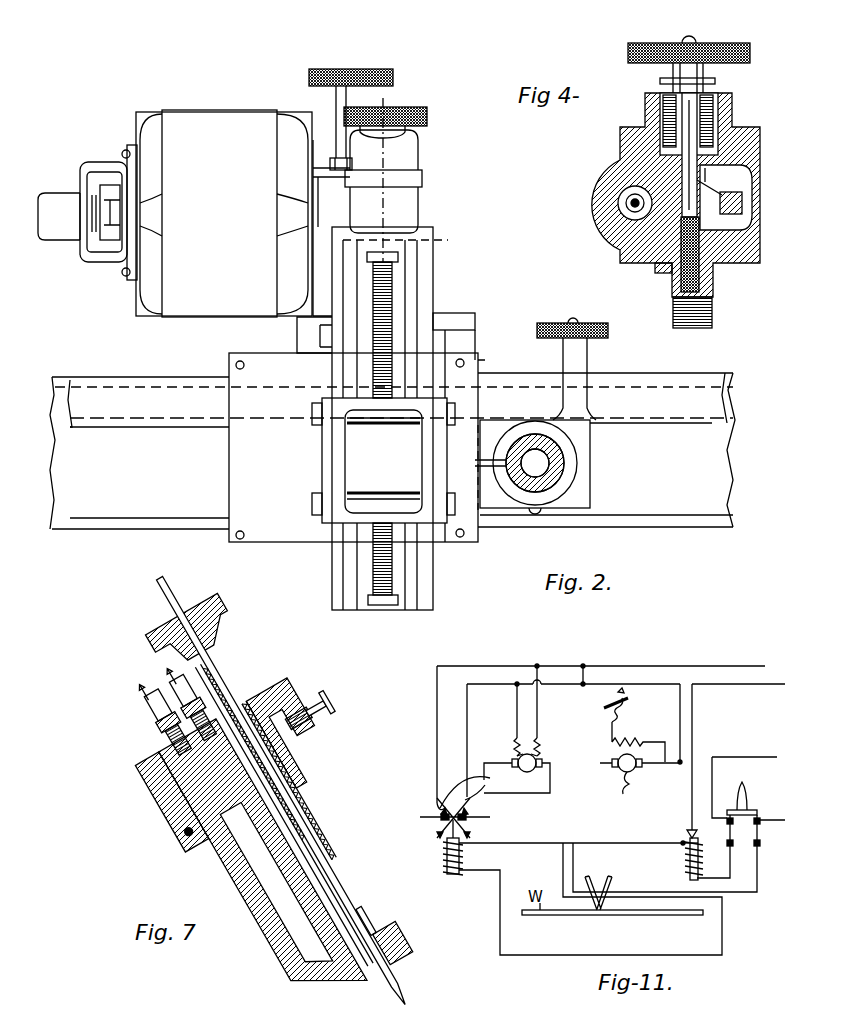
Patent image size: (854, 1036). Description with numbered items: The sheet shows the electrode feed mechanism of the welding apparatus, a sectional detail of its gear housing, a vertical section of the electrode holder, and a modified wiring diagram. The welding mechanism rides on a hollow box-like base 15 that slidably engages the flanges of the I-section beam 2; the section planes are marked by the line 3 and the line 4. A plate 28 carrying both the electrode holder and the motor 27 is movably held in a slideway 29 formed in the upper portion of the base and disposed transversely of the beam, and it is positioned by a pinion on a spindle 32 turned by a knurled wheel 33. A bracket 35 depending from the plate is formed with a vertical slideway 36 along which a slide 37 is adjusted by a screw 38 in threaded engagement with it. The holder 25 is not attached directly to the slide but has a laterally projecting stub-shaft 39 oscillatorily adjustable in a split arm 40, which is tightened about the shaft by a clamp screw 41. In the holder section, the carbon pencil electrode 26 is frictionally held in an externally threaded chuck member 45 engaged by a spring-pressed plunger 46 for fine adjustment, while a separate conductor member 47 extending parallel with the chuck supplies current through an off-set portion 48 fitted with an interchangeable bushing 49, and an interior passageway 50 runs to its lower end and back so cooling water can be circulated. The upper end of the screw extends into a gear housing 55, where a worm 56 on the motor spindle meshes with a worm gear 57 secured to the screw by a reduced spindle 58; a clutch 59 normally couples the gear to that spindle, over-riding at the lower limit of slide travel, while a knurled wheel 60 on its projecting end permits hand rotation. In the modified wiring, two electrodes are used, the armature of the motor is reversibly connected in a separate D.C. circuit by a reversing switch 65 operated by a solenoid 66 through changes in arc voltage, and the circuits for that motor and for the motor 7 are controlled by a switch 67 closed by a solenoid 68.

In FIG. 2, the beam 2 is at (730, 478).
In FIG. 2, the section line 3— 3 is at (448, 240).
In FIG. 2, the section line 4— 4 is at (372, 98).
In FIG. 11, the motor 7 is at (640, 746).
In FIG. 2, the base 15 is at (236, 462).
In FIG. 7, the holder 25 is at (160, 812).
In FIG. 7, the welding electrode 26 is at (330, 876).
In FIG. 11, the welding electrode 26 is at (608, 866).
In FIG. 2, the motor 27 is at (215, 113).
In FIG. 11, the motor 27 is at (515, 762).
In FIG. 2, the plate 28 is at (445, 318).
In FIG. 2, the slideway 29 is at (318, 338).
In FIG. 2, the spindle 32 is at (330, 115).
In FIG. 2, the knurled wheel 33 is at (330, 69).
In FIG. 2, the bracket 35 is at (437, 585).
In FIG. 2, the vertical slideway 36 is at (355, 548).
In FIG. 2, the slide 37 is at (350, 468).
In FIG. 2, the screw 38 is at (385, 275).
In FIG. 4, the screw 38 is at (712, 315).
In FIG. 2, the stub-shaft 39 is at (555, 475).
In FIG. 2, the arm 40 is at (513, 435).
In FIG. 2, the clamp screw 41 is at (587, 356).
In FIG. 7, the chuck member 45 is at (300, 790).
In FIG. 7, the spring-pressed plunger 46 is at (275, 718).
In FIG. 7, the conductor member 47 is at (232, 883).
In FIG. 7, the off-set portion 48 is at (395, 945).
In FIG. 7, the interchangeable bushing 49 is at (376, 925).
In FIG. 7, the interior passageway 50 is at (283, 930).
In FIG. 2, the gear housing 55 is at (383, 180).
In FIG. 4, the gear housing 55 is at (605, 175).
In FIG. 4, the worm 56 is at (622, 208).
In FIG. 4, the worm gear 57 is at (742, 205).
In FIG. 4, the spindle 58 is at (712, 195).
In FIG. 4, the clutch 59 is at (660, 150).
In FIG. 2, the knurled wheel 60 is at (428, 117).
In FIG. 4, the knurled wheel 60 is at (750, 53).
In FIG. 11, the reversing switch 65 is at (445, 812).
In FIG. 11, the solenoid 66 is at (462, 857).
In FIG. 11, the switch 67 is at (686, 836).
In FIG. 11, the solenoid 68 is at (688, 862).